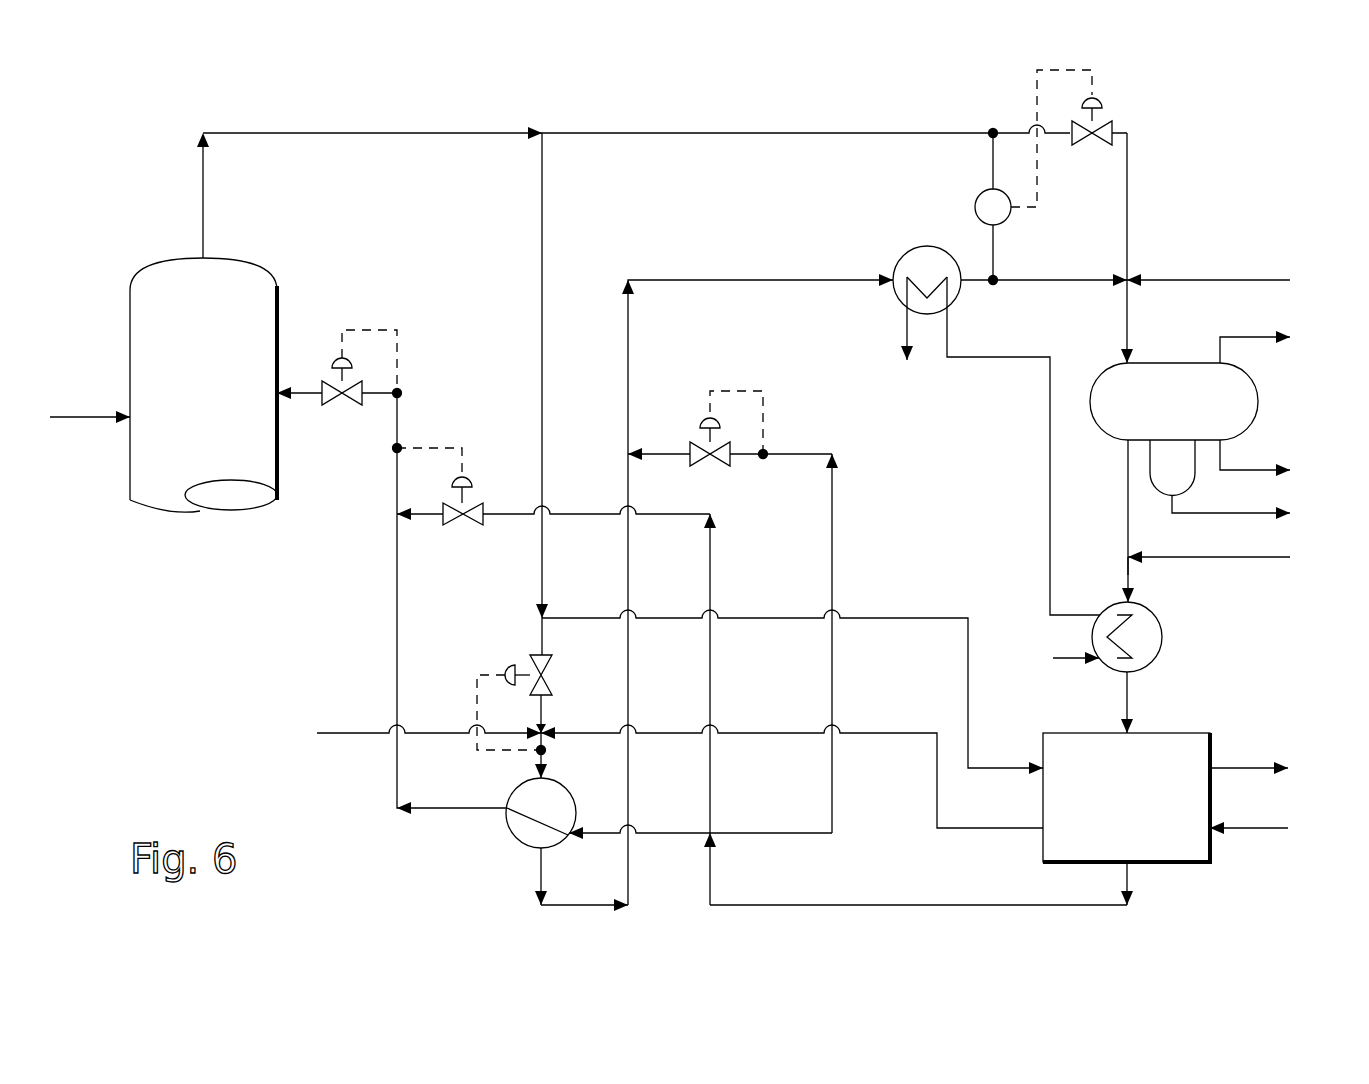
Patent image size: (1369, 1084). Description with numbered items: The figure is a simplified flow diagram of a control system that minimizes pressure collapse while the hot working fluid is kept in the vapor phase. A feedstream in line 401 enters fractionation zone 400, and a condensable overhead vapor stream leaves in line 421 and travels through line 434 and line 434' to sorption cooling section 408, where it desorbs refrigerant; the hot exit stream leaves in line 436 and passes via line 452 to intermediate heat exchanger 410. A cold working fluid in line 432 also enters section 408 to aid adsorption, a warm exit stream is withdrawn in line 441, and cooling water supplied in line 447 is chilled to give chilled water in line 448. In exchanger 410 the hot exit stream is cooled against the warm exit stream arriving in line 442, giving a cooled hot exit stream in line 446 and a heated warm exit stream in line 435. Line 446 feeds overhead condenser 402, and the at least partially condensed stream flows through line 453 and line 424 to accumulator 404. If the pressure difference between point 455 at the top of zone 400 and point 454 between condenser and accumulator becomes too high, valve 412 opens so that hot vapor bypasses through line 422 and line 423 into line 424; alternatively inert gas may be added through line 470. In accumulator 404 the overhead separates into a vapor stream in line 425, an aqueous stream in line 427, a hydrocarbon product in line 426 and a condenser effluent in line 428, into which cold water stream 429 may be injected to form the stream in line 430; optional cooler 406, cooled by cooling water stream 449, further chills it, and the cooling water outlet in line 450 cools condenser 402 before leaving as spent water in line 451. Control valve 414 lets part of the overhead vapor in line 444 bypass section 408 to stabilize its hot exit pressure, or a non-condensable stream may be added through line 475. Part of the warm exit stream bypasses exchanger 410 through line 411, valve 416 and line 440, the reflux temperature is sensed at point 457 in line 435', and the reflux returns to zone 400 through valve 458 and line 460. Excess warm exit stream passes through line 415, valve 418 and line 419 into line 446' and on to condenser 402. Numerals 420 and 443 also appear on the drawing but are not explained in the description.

The fractionation zone 400 is at (228, 369).
The feedstream line 401 is at (88, 417).
The overhead condenser 402 is at (948, 248).
The accumulator 404 is at (1203, 418).
The optional cooler 406 is at (1162, 637).
The sorption cooling section 408 is at (1150, 816).
The intermediate heat exchanger 410 is at (515, 842).
The warm exit bypass line 411 is at (568, 517).
The hot vapor by-pass valve 412 is at (1114, 125).
The control valve 414 is at (533, 660).
The excess warm exit line 415 is at (793, 458).
The reflux temperature control valve 416 is at (463, 525).
The excess warm exit valve 418 is at (725, 470).
The line 419 is at (663, 453).
The flow sensor 420 is at (975, 205).
The condensable overhead line 421 is at (322, 128).
The hot vapor by-pass line 422 is at (733, 133).
The hot vapor by-pass line 423 is at (1128, 210).
The accumulator inlet line 424 is at (1130, 312).
The vapor stream line 425 is at (1268, 345).
The hydrocarbon product line 426 is at (1270, 455).
The aqueous stream line 427 is at (1270, 497).
The condenser effluent line 428 is at (1127, 490).
The cold water stream 429 is at (1282, 558).
The condenser effluent line 430 is at (1130, 578).
The cold working fluid line 432 is at (1130, 695).
The overhead vapor line 434 is at (575, 375).
The hot fluid stream line 434' is at (792, 678).
The heated warm exit line 435 is at (417, 631).
The reflux line 435' is at (438, 420).
The hot exit stream line 436 is at (880, 733).
The line 440 is at (425, 517).
The warm exit stream line 441 is at (1130, 882).
The line 442 is at (663, 835).
The line 443 is at (545, 705).
The by-pass line 444 is at (542, 645).
The cooled hot exit line 446 is at (757, 394).
The cooled hot exit line 446' is at (661, 623).
The cooling water supply line 447 is at (1257, 768).
The chilled water line 448 is at (1262, 828).
The cooling water stream 449 is at (1078, 665).
The cooling water outlet line 450 is at (1050, 542).
The spent cooling water line 451 is at (907, 333).
The hot exit return line 452 is at (545, 762).
The partially condensed stream line 453 is at (1090, 278).
The pressure point 454 is at (990, 286).
The pressure point 455 is at (994, 128).
The temperature measurement point 457 is at (393, 451).
The reflux control valve 458 is at (342, 410).
The reflux return line 460 is at (308, 393).
The inert gas line 470 is at (1232, 280).
The non-condensable stream line 475 is at (345, 735).